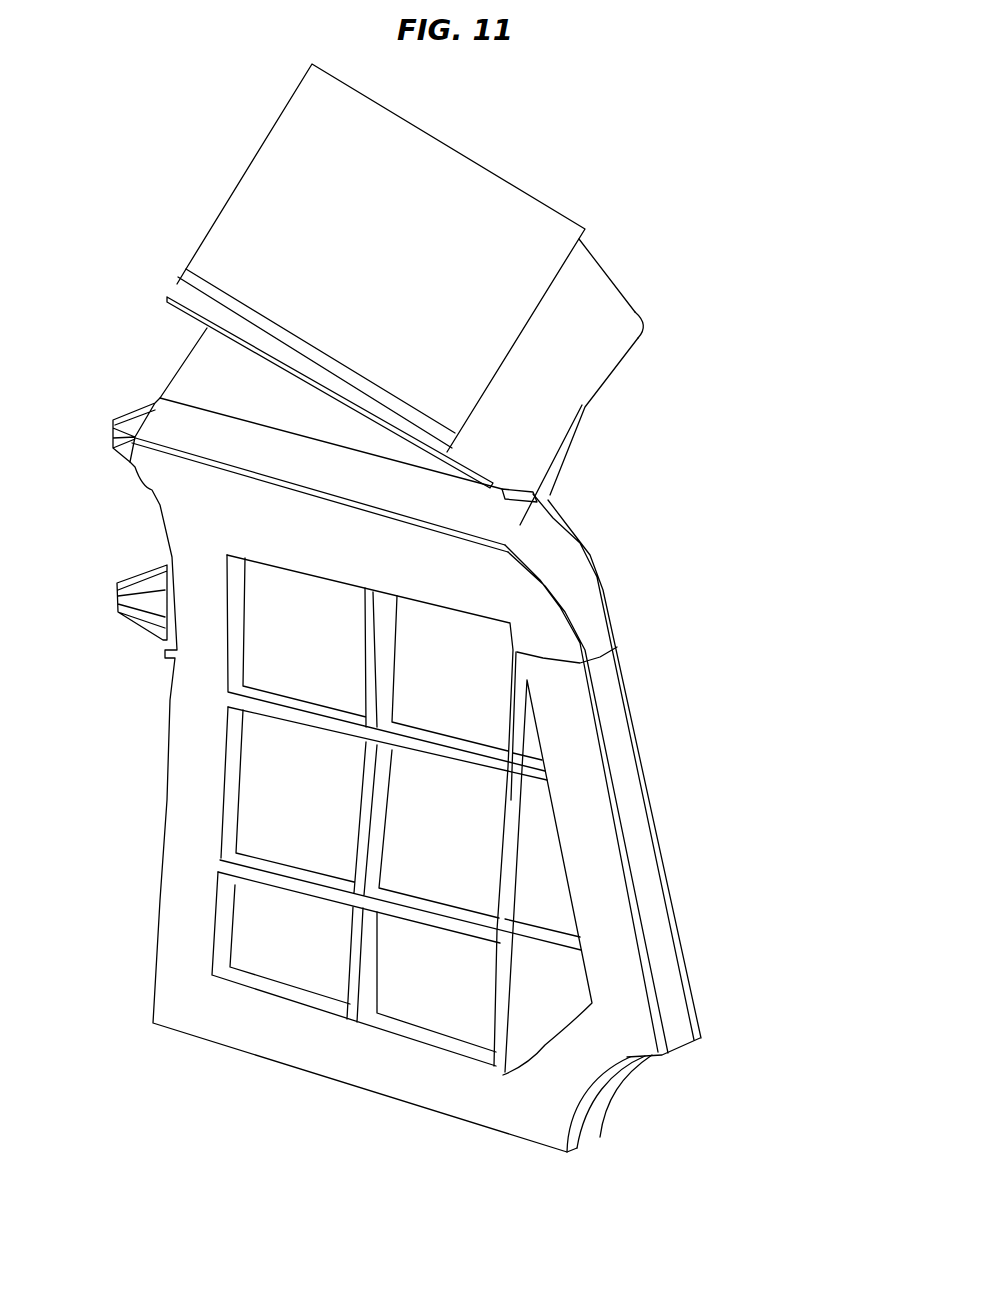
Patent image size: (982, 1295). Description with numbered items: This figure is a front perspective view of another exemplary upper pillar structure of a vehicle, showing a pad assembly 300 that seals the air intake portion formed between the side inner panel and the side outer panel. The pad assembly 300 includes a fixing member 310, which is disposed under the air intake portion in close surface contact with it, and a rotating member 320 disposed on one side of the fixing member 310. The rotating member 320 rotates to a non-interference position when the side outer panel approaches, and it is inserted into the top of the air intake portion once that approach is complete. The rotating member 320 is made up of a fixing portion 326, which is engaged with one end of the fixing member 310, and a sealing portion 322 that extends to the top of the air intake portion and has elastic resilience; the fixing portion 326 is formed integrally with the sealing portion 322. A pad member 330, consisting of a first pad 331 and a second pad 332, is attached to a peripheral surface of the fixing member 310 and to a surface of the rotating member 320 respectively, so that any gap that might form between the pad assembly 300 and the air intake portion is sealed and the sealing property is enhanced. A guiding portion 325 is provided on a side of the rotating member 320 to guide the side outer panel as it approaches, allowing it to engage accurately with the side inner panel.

The pad assembly 300 is at (699, 467).
The fixing member 310 is at (640, 820).
The rotating member 320 is at (768, 176).
The sealing portion 322 is at (583, 265).
The guiding portion 325 is at (185, 292).
The fixing portion 326 is at (640, 339).
The pad member 330 is at (768, 518).
The first pad 331 is at (600, 633).
The second pad 332 is at (475, 370).